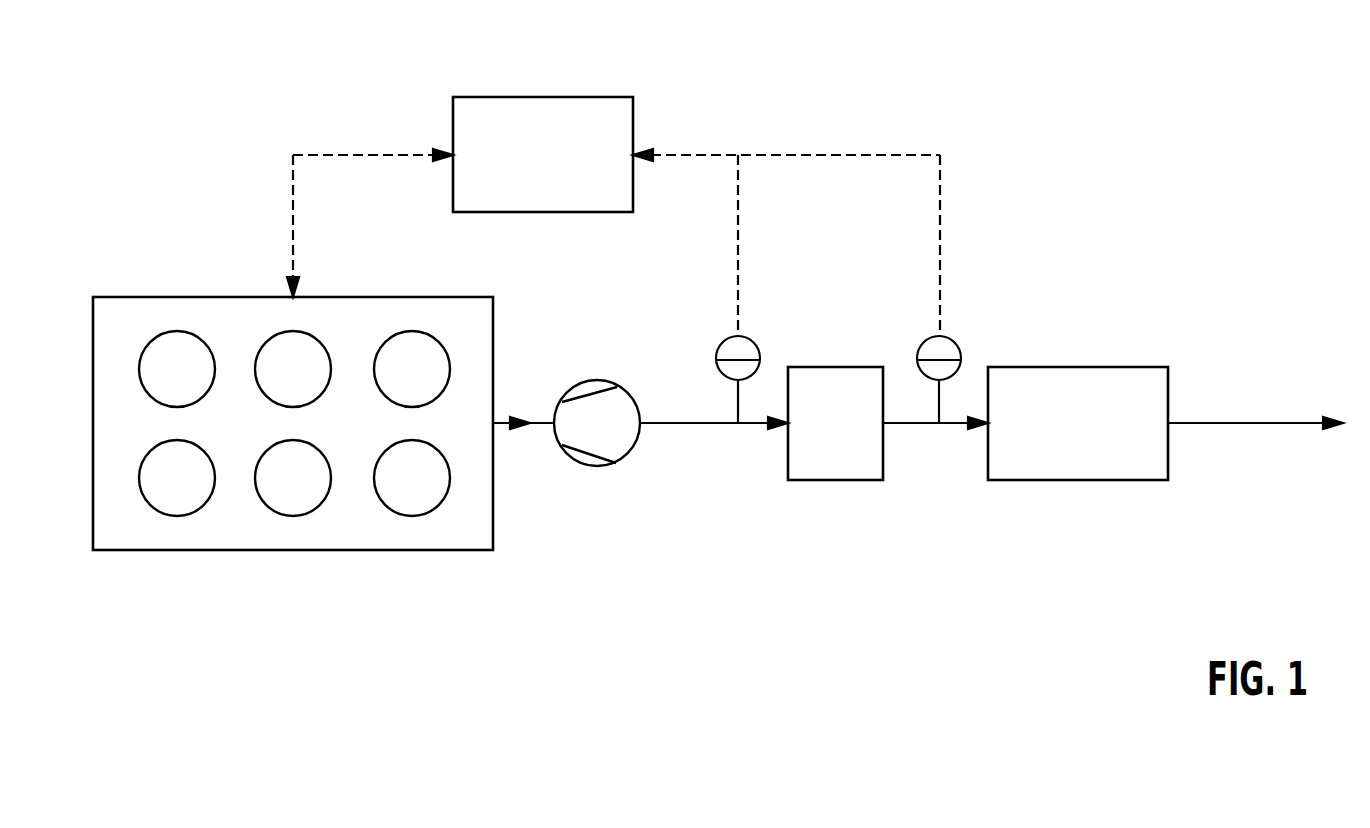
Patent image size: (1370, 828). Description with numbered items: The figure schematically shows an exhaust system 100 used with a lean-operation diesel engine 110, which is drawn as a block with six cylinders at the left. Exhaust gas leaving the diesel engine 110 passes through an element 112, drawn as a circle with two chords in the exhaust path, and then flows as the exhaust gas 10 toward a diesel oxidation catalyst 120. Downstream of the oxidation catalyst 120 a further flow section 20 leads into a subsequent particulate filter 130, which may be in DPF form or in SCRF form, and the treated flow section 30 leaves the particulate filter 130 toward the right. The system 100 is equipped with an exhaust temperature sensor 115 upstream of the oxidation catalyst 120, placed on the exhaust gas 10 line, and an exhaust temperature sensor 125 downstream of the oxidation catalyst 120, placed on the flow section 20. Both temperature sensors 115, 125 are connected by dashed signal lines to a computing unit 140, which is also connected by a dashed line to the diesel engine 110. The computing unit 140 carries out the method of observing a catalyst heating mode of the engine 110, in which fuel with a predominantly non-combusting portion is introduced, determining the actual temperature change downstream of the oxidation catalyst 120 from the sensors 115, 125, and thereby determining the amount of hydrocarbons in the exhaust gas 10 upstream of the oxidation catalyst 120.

The exhaust system 100 is at (1194, 126).
The diesel engine 110 is at (288, 550).
The compressor 112 is at (597, 467).
The exhaust temperature sensor 115 is at (716, 344).
The exhaust temperature sensor 125 is at (917, 344).
The diesel oxidation catalyst 120 is at (835, 480).
The particulate filter 130 is at (1075, 480).
The computing unit 140 is at (542, 212).
The exhaust gas 10 is at (712, 427).
The second flow section 20 is at (912, 427).
The outlet flow section 30 is at (1232, 427).